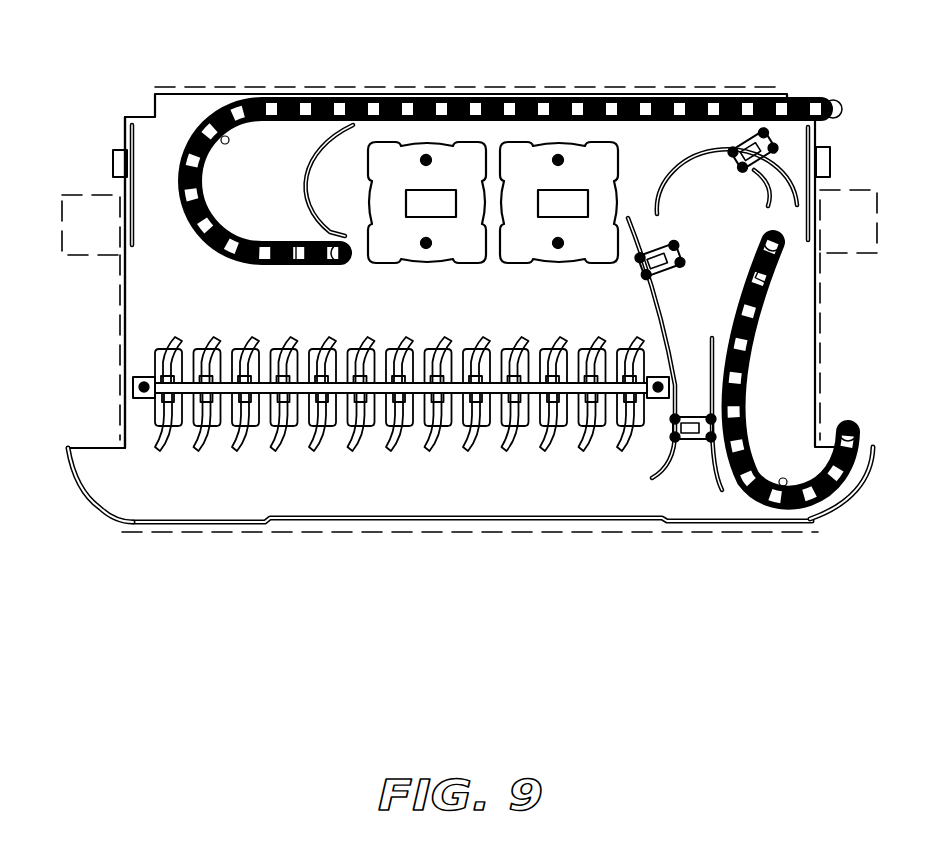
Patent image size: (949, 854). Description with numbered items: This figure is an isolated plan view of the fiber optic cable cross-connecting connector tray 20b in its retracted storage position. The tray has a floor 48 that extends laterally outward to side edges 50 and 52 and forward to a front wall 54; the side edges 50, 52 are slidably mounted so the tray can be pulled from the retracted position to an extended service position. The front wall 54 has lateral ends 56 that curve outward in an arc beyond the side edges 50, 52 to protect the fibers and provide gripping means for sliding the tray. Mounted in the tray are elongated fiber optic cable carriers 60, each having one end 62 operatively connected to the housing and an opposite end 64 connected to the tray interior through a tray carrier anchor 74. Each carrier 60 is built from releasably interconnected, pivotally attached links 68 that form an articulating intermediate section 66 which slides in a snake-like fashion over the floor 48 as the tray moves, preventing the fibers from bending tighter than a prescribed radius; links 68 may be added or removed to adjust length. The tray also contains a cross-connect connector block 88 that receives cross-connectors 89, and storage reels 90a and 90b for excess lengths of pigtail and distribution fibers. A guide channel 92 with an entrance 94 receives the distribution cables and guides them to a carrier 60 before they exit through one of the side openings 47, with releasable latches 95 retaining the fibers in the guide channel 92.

The cross-connecting connector tray 20b is at (645, 82).
The side openings 47 is at (830, 447).
The floor 48 is at (178, 105).
The side edge 50 is at (125, 320).
The side edge 52 is at (818, 342).
The front wall 54 is at (470, 525).
The lateral ends 56 is at (100, 507).
The fiber optic cable carrier 60 is at (203, 246).
The one end 62 is at (835, 108).
The opposite end 64 is at (305, 262).
The articulating intermediate section 66 is at (293, 117).
The links 68 is at (200, 163).
The tray carrier anchor 74 is at (345, 262).
The cross-connect connector block 88 is at (392, 348).
The cross-connectors 89 is at (445, 415).
The storage reel 90a is at (393, 157).
The storage reel 90b is at (527, 157).
The guide channel 92 is at (655, 298).
The entrance 94 is at (718, 490).
The releasable latches 95 is at (735, 160).